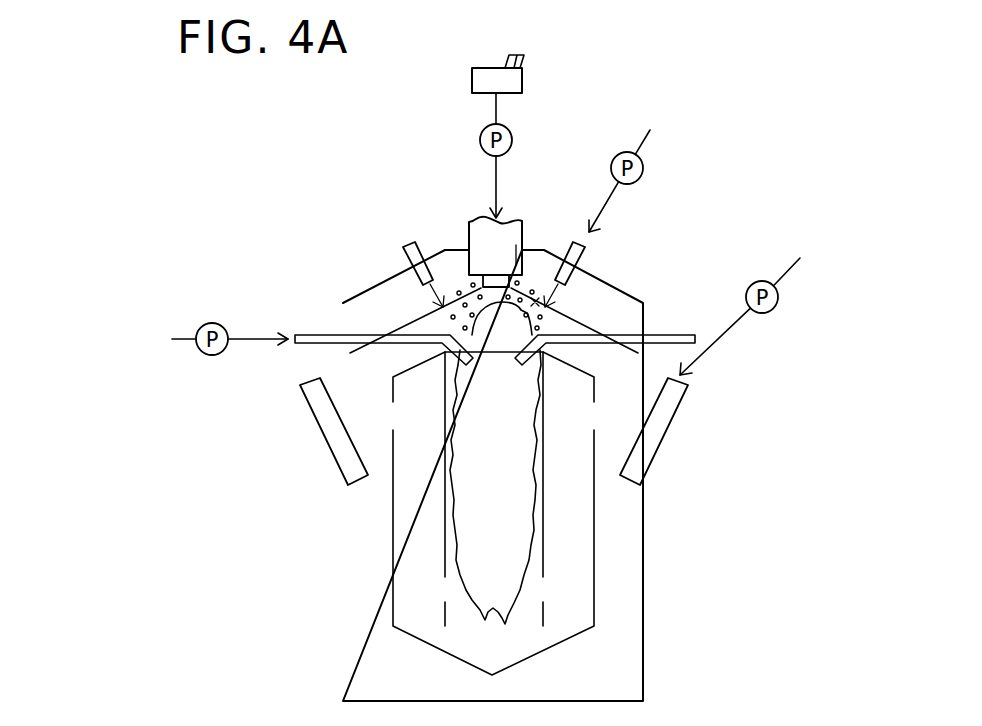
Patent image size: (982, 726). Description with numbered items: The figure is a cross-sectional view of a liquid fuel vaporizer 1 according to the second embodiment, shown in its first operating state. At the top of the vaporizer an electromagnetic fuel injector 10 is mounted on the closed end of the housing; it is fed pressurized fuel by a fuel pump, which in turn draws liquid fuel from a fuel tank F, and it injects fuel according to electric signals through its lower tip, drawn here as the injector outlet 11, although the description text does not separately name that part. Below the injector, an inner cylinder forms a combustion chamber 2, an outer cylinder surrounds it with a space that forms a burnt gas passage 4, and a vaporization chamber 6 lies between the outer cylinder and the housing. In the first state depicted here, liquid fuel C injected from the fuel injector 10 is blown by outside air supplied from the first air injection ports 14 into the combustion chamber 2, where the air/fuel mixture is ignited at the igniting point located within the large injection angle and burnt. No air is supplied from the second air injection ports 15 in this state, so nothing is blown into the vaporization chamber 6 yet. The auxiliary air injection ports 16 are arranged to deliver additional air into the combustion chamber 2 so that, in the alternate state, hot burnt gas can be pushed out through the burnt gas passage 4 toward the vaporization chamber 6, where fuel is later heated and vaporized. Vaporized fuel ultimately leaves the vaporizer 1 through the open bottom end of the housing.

The liquid fuel vaporizer 1 is at (310, 590).
The combustion chamber 2 is at (483, 483).
The burnt gas passage 4 is at (557, 483).
The vaporization chamber 6 is at (626, 410).
The electromagnetic fuel injector 10 is at (503, 245).
The nozzle 11 is at (484, 288).
The first air injection ports 14 is at (403, 245).
The second air injection ports 15 is at (317, 407).
The auxiliary air injection ports 16 is at (318, 337).
The liquid fuel C is at (518, 284).
The fuel tank F is at (522, 80).